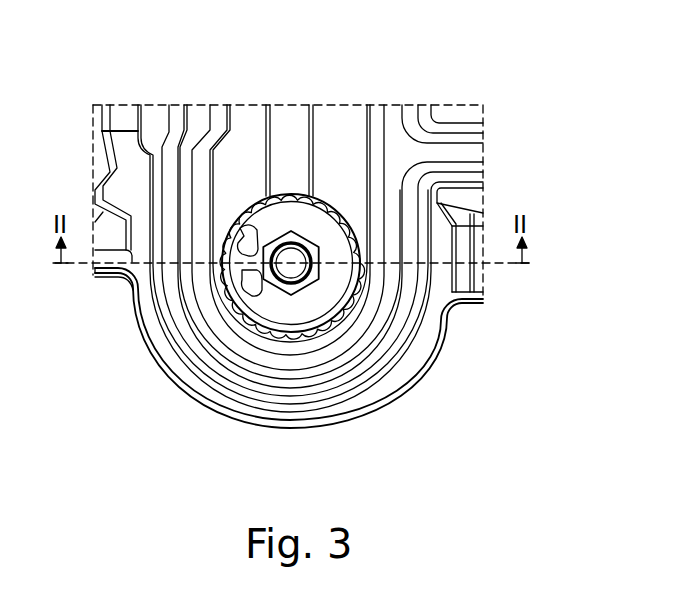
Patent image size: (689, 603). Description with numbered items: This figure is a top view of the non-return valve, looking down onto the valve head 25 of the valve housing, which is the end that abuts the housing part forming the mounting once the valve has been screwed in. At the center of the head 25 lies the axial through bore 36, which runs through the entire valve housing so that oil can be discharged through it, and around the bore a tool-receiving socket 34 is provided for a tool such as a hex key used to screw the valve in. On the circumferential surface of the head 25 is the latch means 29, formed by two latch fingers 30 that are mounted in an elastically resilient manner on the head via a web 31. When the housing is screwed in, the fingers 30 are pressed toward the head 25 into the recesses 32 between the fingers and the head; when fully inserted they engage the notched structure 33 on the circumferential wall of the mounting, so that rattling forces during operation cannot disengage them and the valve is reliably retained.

The head 25 is at (330, 288).
The latch means 29 is at (150, 200).
The latch fingers 30 is at (220, 256).
The web 31 is at (222, 280).
The recesses 32 is at (250, 224).
The notched structure 33 is at (340, 316).
The tool-receiving socket 34 is at (303, 232).
The through bore 36 is at (293, 282).